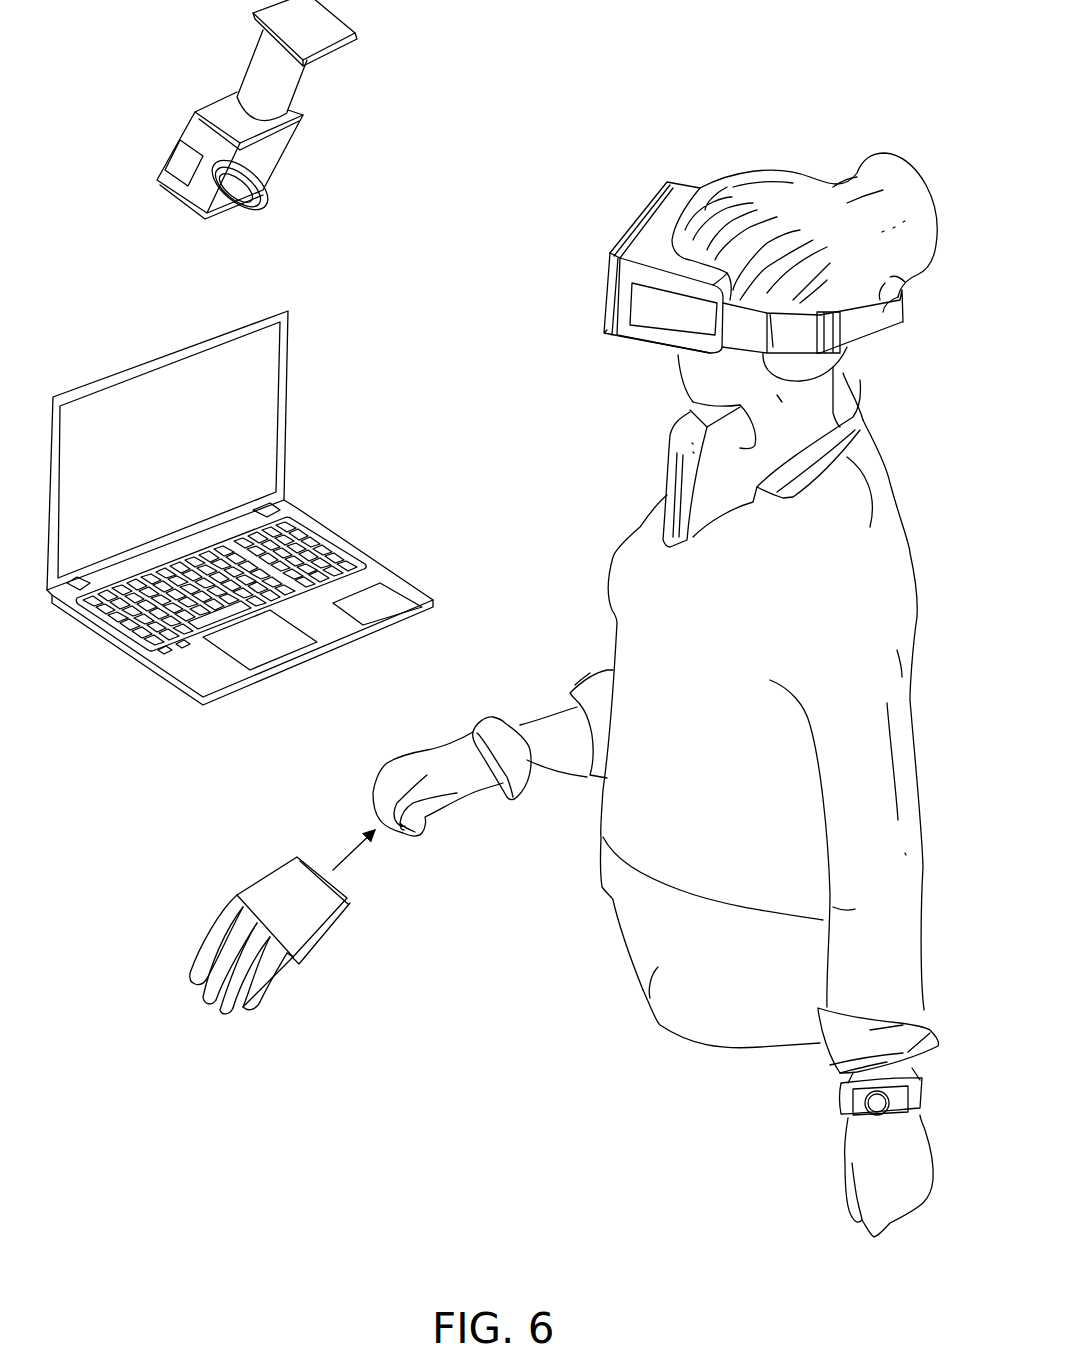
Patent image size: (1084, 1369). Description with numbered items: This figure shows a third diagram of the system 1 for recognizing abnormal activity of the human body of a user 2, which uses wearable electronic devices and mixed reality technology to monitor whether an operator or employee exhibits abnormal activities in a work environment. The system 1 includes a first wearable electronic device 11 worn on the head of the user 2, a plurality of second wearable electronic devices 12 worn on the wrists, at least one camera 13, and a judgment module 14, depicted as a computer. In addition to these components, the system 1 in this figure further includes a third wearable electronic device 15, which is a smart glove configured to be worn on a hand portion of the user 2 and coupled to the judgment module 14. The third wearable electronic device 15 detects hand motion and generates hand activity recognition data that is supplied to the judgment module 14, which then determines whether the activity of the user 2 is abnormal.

The system for recognizing abnormal activity of human body 1 is at (176, 800).
The user 2 is at (894, 490).
The first wearable electronic device 11 is at (661, 180).
The second wearable electronic devices 12 is at (515, 810).
The camera 13 is at (212, 97).
The judgment module 14 is at (363, 546).
The third wearable electronic device 15 is at (216, 1021).